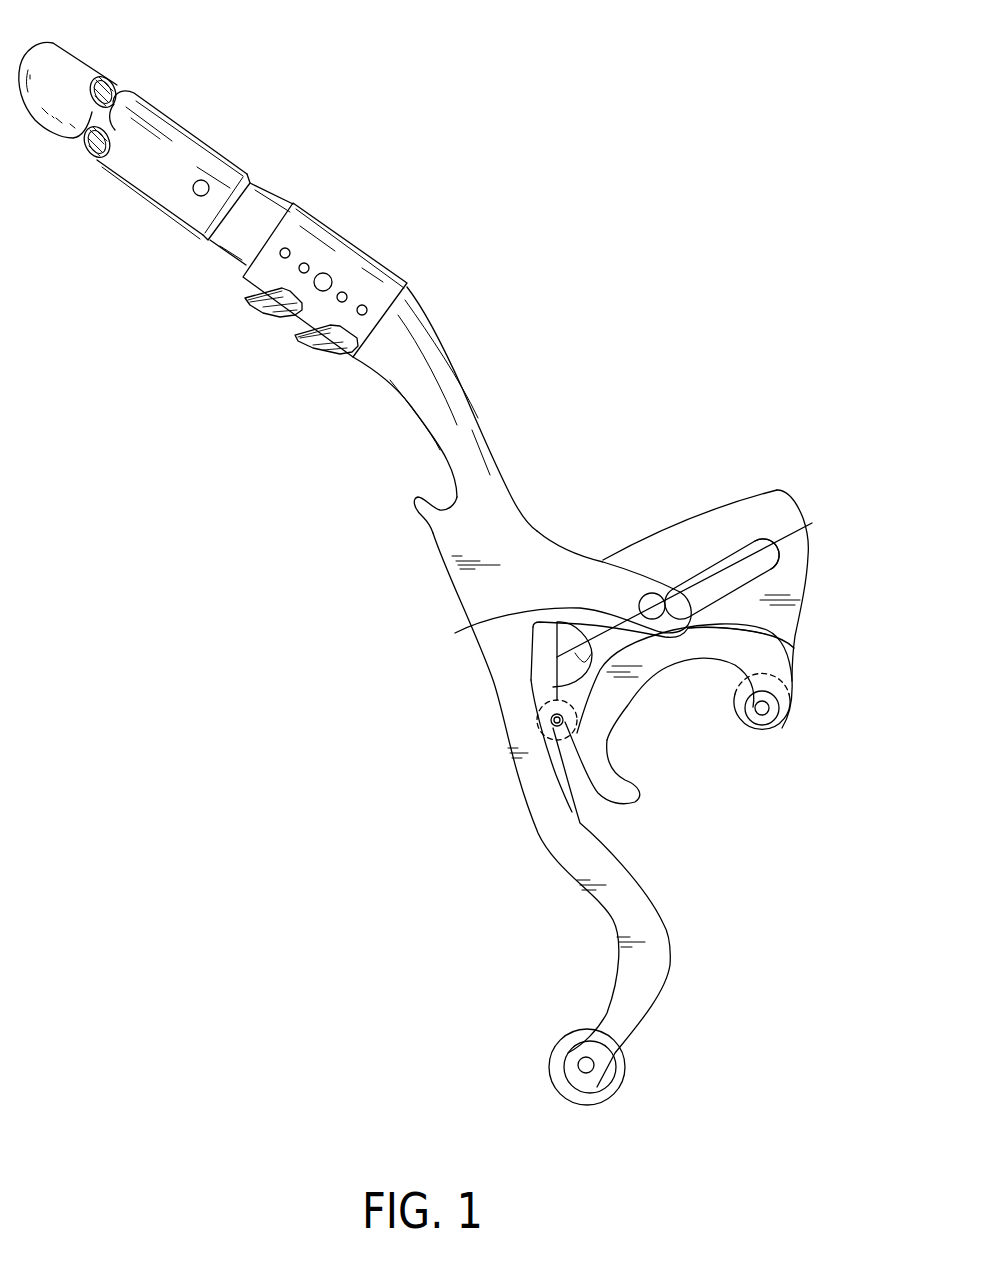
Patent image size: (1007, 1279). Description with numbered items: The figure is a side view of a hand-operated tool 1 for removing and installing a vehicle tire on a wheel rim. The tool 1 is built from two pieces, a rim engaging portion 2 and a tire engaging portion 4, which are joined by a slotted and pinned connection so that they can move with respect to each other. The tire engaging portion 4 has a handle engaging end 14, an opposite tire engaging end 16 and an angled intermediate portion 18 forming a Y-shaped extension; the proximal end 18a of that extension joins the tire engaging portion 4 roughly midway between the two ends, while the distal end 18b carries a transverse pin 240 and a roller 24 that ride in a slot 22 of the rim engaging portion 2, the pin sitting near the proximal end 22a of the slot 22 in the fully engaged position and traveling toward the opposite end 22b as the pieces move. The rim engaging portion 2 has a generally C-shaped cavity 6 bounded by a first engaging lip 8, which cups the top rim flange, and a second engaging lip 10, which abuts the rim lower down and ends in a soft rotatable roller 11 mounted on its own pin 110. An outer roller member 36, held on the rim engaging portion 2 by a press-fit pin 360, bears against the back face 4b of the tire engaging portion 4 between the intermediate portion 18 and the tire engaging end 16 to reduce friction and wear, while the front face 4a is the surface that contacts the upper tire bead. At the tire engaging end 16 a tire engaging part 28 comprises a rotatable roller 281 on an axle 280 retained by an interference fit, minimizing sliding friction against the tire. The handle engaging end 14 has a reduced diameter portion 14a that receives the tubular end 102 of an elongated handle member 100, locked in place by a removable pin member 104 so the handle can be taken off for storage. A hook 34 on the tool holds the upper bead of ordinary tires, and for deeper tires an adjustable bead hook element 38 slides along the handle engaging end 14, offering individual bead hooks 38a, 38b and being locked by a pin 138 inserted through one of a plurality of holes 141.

The tool 1 is at (459, 589).
The rim engaging portion 2 is at (643, 561).
The tire engaging portion 4 is at (551, 810).
The front face 4a is at (593, 890).
The back face 4b is at (573, 813).
The C-shaped cavity 6 is at (680, 711).
The first engaging lip 8 is at (622, 772).
The second engaging lip 10 is at (684, 710).
The rotatable roller 11 is at (780, 725).
The handle engaging end 14 is at (446, 409).
The reduced diameter portion 14a is at (203, 245).
The tire engaging end 16 is at (684, 972).
The intermediate portion 18 is at (592, 534).
The proximal end 18a is at (560, 577).
The distal end 18b is at (455, 633).
The slot 22 is at (593, 554).
The proximal end of slot 22a is at (755, 538).
The slot lower end 22b is at (553, 687).
The roller 24 is at (680, 573).
The tire engaging part 28 is at (633, 1095).
The hook 34 is at (403, 536).
The outer roller member 36 is at (550, 713).
The adjustable bead hook element 38 is at (372, 269).
The bead hook 38a is at (266, 312).
The bead hook 38b is at (324, 354).
The handle member 100 is at (267, 170).
The tubular end 102 is at (200, 130).
The pin member 104 is at (207, 183).
The roller pin 110 is at (769, 709).
The pin 138 is at (332, 278).
The holes 141 is at (367, 308).
The pin 240 is at (705, 603).
The axle 280 is at (593, 1070).
The rotatable roller 281 is at (568, 1092).
The press-fit pin 360 is at (557, 773).